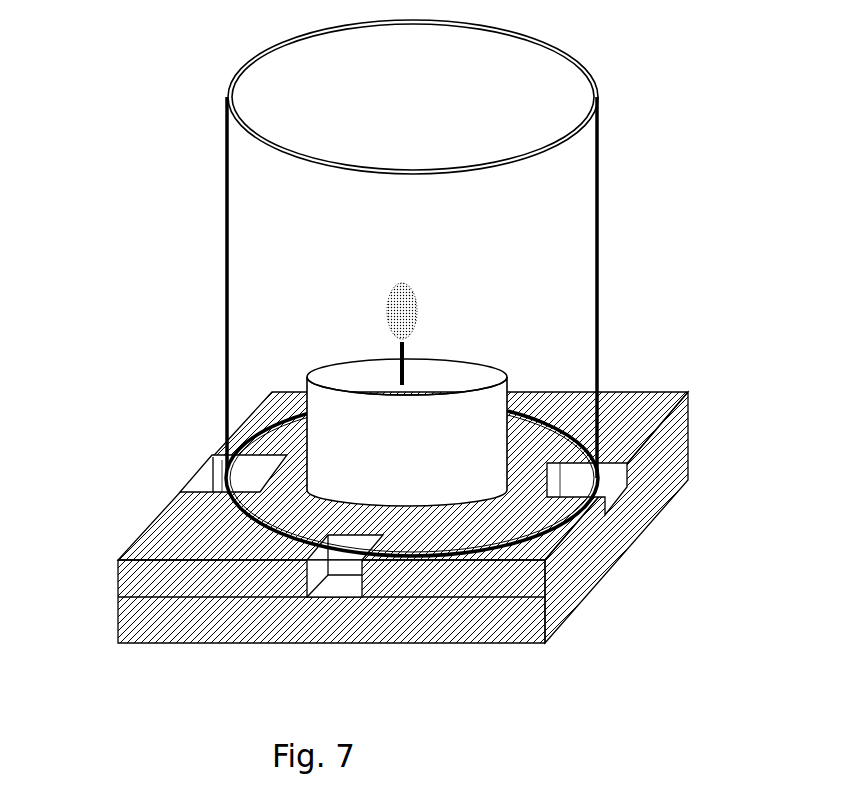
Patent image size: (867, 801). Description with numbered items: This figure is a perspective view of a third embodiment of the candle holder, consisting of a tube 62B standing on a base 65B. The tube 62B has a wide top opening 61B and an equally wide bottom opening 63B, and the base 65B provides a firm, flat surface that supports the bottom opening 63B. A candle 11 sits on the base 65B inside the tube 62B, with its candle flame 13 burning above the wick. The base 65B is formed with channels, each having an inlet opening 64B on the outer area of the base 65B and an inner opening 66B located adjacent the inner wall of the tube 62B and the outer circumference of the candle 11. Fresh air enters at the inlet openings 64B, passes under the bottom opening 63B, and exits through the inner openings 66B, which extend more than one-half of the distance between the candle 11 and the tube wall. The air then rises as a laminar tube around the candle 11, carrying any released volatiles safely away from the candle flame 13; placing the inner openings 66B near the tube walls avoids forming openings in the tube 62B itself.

The candle 11 is at (338, 362).
The candle flame 13 is at (390, 300).
The top opening 61B is at (600, 89).
The tube 62B is at (601, 190).
The bottom opening 63B is at (565, 520).
The inlet openings 64B is at (358, 580).
The base 65B is at (650, 392).
The inner openings 66B is at (277, 468).